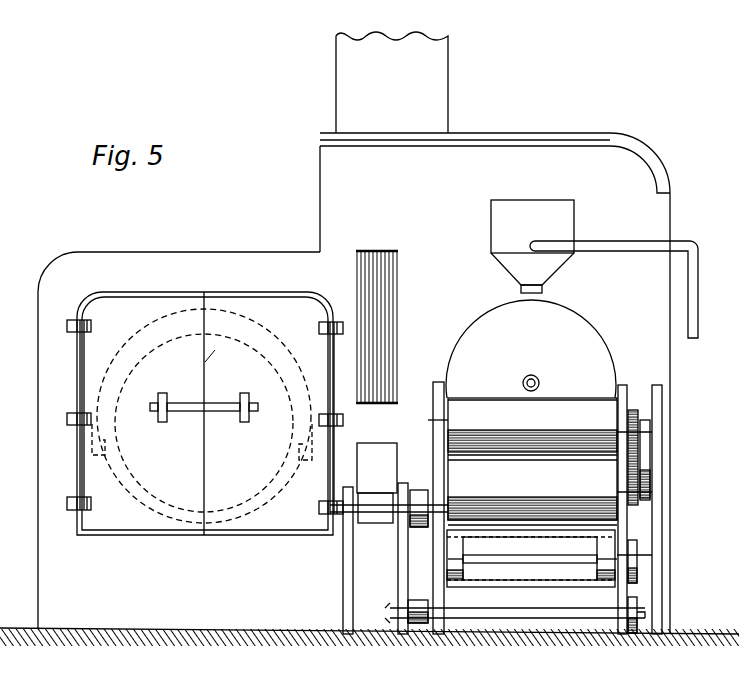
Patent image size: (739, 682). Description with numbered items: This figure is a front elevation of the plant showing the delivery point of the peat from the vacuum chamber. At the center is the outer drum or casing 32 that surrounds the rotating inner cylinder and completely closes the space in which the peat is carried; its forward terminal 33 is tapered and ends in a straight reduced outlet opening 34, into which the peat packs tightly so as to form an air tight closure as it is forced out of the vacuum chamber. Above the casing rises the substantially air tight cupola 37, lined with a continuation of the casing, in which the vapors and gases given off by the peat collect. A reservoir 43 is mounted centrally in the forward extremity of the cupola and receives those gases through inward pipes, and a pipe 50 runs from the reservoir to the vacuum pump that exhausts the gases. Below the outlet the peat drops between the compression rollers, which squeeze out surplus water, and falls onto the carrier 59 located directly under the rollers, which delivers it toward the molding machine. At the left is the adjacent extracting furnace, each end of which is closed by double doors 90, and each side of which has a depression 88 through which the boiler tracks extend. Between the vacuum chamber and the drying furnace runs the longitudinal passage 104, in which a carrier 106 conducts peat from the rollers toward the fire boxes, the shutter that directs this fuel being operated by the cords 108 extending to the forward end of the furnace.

The outer drum or casing 32 is at (573, 326).
The forward terminal 33 is at (523, 508).
The reduced outlet opening 34 is at (533, 375).
The cupola 37 is at (354, 333).
The reservoir 43 is at (562, 218).
The pipe 50 is at (696, 244).
The carrier 59 is at (540, 584).
The depression 88 is at (78, 450).
The double doors 90 is at (205, 413).
The longitudinal passage 104 is at (375, 538).
The carrier 106 is at (373, 523).
The cords 108 is at (398, 352).